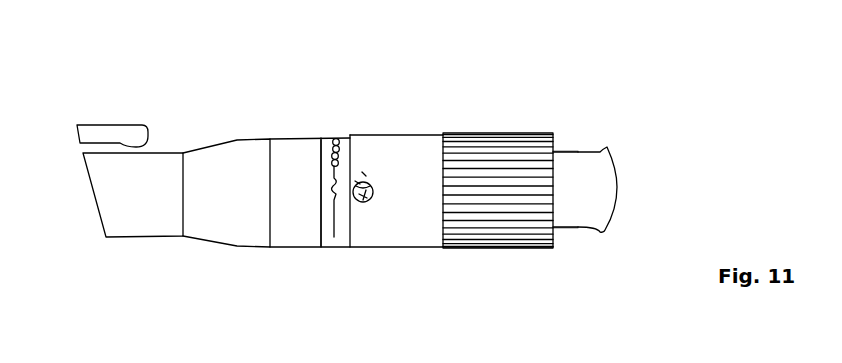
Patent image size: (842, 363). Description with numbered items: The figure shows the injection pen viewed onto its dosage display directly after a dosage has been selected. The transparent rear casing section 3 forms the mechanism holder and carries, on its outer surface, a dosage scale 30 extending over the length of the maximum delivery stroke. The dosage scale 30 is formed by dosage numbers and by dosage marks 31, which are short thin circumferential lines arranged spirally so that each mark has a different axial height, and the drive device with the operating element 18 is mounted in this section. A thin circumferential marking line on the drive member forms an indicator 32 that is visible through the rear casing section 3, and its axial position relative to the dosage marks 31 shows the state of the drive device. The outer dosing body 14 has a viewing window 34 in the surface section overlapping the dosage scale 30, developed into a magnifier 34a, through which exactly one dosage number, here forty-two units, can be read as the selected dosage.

The rear casing section 3 is at (225, 231).
The outer dosing body 14 is at (418, 146).
The operating element 18 is at (580, 166).
The dosage scale 30 is at (338, 125).
The dosage marks 31 is at (360, 203).
The indicator 32 is at (334, 214).
The viewing window 34 is at (356, 178).
The magnifier 34a is at (362, 172).